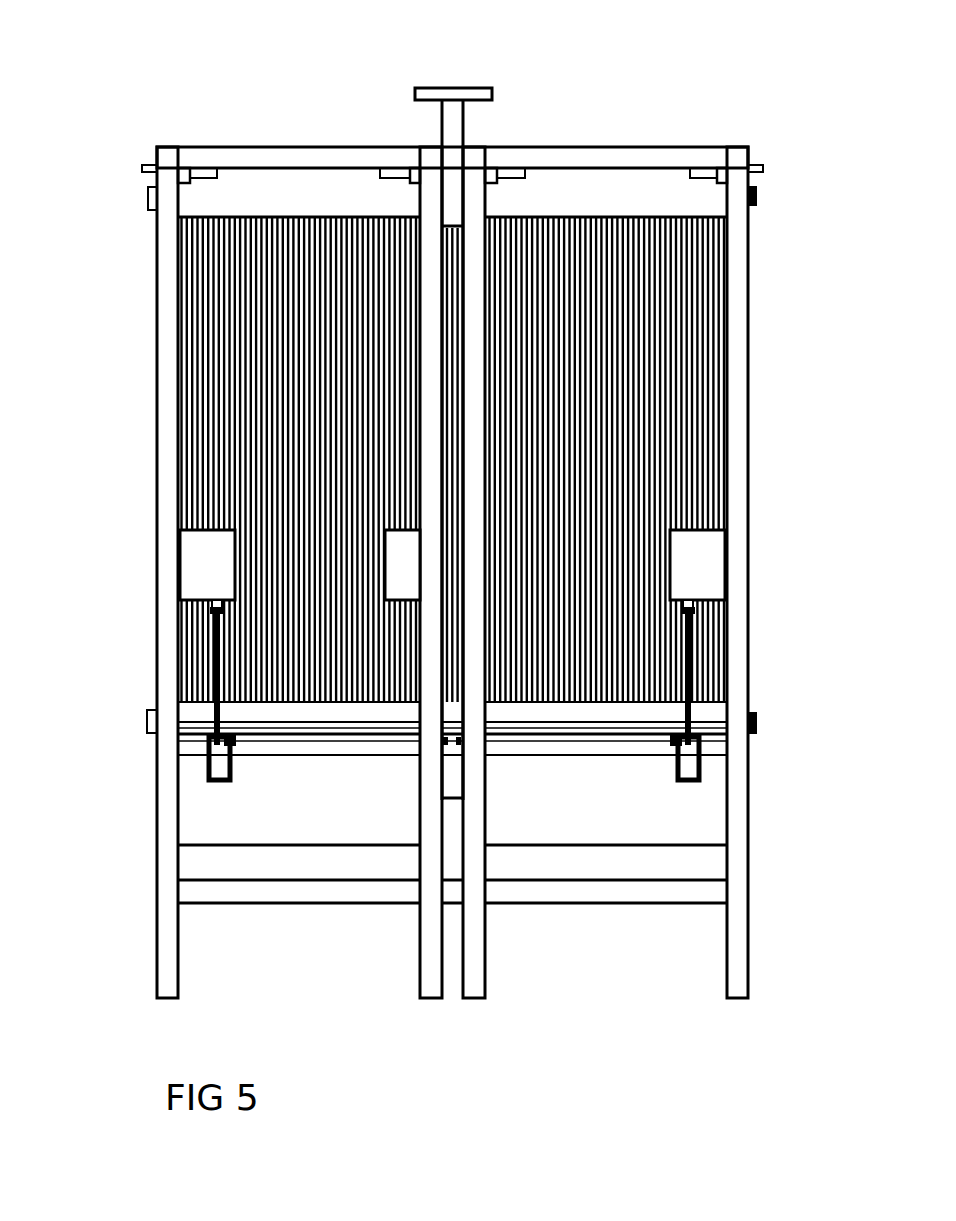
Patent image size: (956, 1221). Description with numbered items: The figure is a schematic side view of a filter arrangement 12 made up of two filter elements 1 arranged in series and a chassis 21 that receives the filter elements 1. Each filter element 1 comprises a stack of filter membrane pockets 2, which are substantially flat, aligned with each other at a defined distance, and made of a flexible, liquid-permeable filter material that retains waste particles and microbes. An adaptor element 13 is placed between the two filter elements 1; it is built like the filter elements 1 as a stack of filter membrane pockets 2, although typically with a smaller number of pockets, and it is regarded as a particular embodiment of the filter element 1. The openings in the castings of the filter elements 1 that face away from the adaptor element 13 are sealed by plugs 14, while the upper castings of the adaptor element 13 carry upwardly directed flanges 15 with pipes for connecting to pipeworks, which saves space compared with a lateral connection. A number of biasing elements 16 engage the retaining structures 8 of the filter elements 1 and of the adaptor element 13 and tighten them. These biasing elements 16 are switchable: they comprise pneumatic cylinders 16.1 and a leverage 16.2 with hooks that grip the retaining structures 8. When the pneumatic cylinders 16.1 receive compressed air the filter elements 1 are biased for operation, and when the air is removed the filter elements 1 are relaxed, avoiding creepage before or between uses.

The filter element 1 is at (278, 196).
The filter membrane pocket 2 is at (352, 218).
The retaining structure 8 is at (295, 750).
The filter arrangement 12 is at (215, 116).
The adaptor element 13 is at (450, 210).
The plug 14 is at (145, 197).
The upwardly directed flange 15 is at (433, 90).
The biasing element 16 is at (459, 655).
The pneumatic cylinder 16.1 is at (185, 560).
The leverage 16.2 is at (213, 712).
The chassis 21 is at (688, 148).